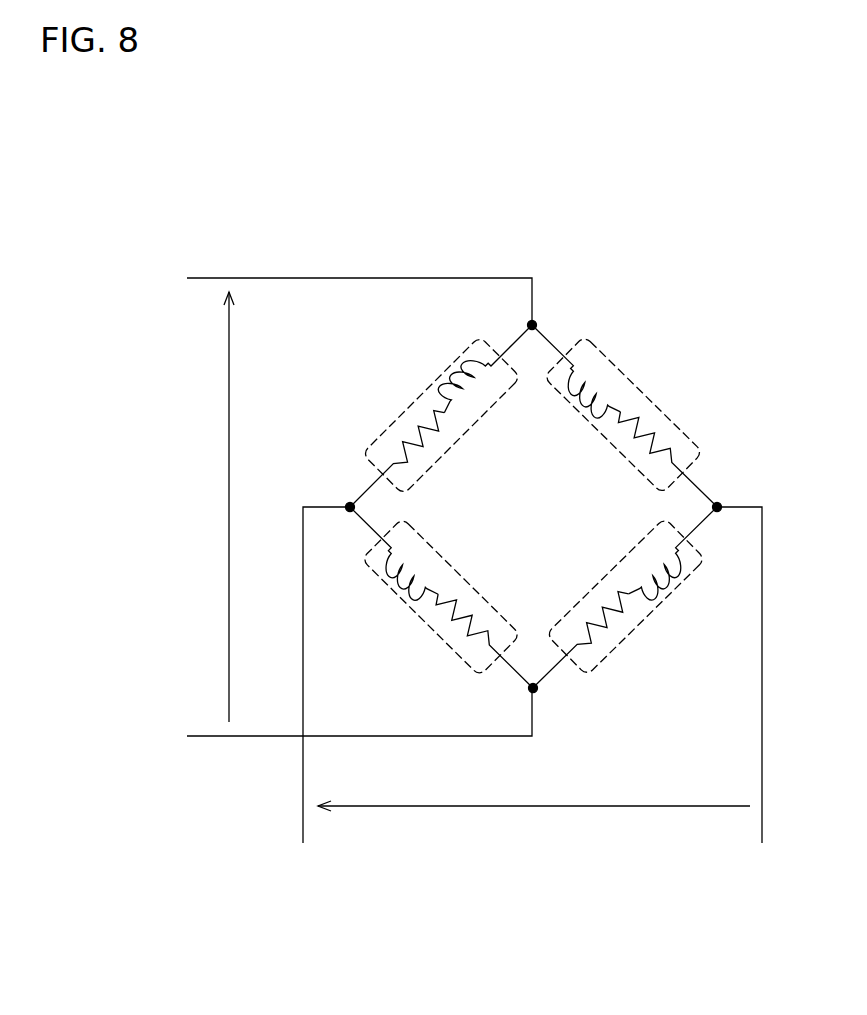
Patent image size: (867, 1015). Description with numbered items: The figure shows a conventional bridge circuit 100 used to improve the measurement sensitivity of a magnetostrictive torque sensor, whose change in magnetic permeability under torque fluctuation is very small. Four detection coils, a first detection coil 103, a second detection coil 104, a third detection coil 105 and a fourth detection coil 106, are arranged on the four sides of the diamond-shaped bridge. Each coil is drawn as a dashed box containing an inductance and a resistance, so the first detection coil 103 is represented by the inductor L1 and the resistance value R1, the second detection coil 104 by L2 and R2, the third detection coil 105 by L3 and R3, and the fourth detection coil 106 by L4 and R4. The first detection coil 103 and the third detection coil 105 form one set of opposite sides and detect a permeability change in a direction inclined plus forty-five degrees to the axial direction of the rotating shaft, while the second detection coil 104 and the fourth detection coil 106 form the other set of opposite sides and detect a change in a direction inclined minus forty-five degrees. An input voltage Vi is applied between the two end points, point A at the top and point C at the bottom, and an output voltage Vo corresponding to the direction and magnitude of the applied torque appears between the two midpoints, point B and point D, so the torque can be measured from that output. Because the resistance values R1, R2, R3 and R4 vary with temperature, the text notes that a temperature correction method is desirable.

The bridge circuit 100 is at (608, 278).
The first detection coil 103 is at (414, 411).
The second detection coil 104 is at (642, 396).
The third detection coil 105 is at (634, 605).
The fourth detection coil 106 is at (428, 603).
The inductor of first element L1 is at (478, 360).
The resistance value R1 is at (396, 454).
The inductor of second element L2 is at (580, 376).
The resistance value R2 is at (668, 457).
The inductor of third element L3 is at (681, 561).
The resistance value R3 is at (585, 640).
The inductor of fourth element L4 is at (387, 561).
The resistance value R4 is at (484, 641).
The point A is at (532, 325).
The point B is at (717, 507).
The point C is at (533, 688).
The point D is at (350, 507).